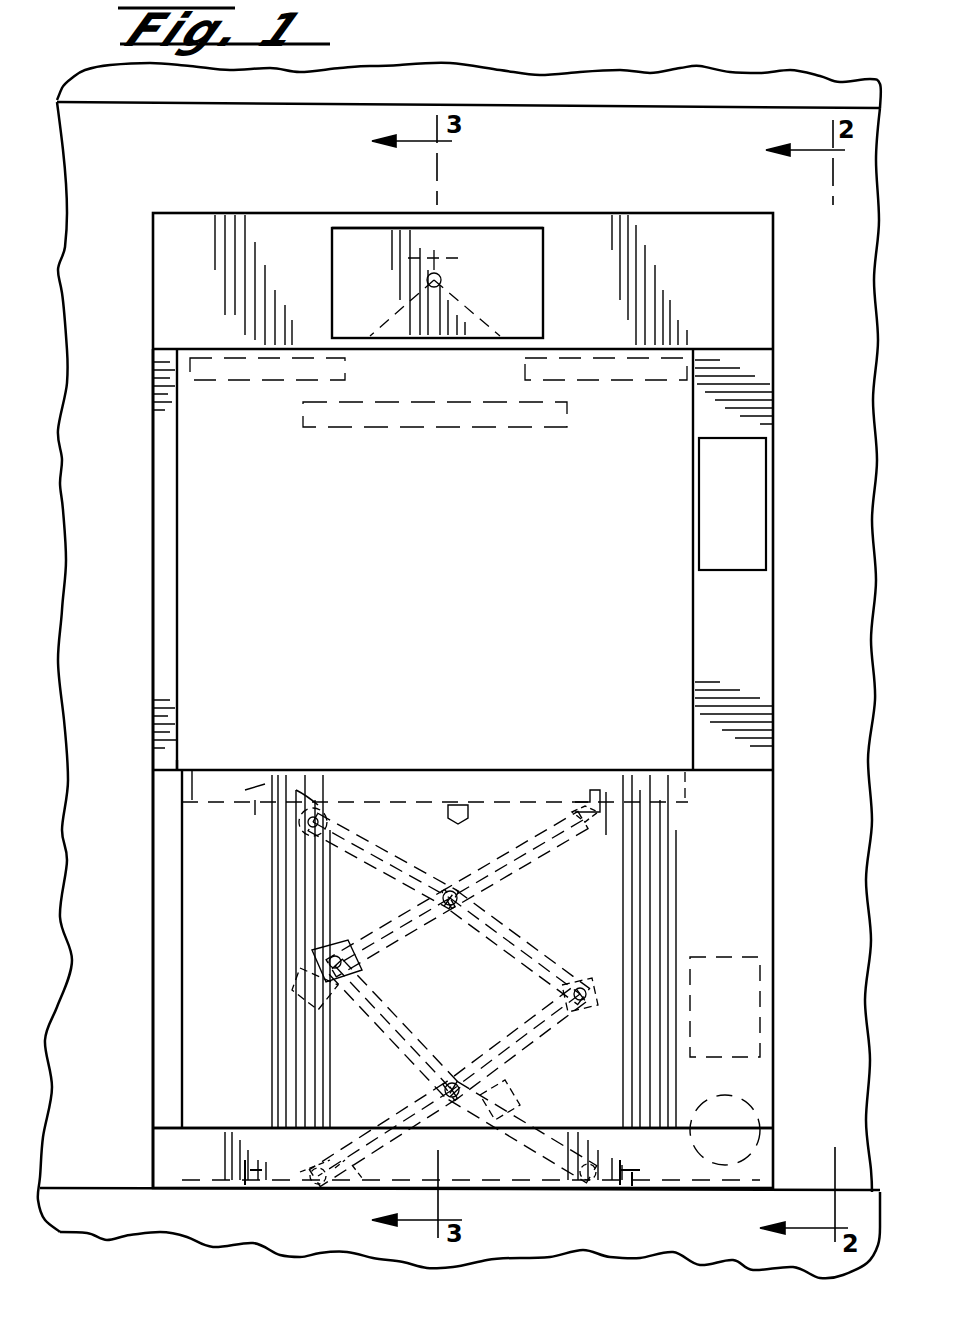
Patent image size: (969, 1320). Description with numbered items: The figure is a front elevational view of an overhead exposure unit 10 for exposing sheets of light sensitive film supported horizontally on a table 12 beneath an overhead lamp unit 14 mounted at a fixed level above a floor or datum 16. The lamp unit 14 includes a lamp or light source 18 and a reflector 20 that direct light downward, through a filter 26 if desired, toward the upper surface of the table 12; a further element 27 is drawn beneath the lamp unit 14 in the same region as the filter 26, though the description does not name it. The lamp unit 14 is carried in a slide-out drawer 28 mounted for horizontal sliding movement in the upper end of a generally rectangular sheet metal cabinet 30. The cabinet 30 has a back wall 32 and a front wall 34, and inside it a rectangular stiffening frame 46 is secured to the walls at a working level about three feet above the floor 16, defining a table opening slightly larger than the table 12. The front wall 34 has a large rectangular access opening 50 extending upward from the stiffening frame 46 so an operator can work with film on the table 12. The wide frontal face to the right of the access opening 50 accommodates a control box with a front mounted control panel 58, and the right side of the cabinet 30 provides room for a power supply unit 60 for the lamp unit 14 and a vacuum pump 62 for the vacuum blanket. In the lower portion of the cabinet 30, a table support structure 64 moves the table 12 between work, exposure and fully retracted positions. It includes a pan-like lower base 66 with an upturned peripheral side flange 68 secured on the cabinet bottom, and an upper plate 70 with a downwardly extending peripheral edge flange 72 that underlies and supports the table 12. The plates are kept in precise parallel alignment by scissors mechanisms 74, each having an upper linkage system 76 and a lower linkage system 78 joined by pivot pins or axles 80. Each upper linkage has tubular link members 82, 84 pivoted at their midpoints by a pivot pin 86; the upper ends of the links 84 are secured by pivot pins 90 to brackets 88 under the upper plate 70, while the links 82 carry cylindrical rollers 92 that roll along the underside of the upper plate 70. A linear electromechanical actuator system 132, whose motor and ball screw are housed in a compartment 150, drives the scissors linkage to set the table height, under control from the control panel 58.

The overhead exposure unit 10 is at (136, 598).
The table 12 is at (182, 806).
The overhead lamp unit 14 is at (490, 292).
The floor or datum 16 is at (100, 1186).
The lamp or light source 18 is at (436, 276).
The reflector 20 is at (382, 280).
The filter 26 is at (272, 372).
The guide rail 27 is at (418, 418).
The slide-out drawer 28 is at (543, 252).
The cabinet 30 is at (150, 990).
The back wall 32 is at (440, 553).
The front wall 34 is at (242, 953).
The stiffening frame 46 is at (180, 768).
The access opening 50 is at (185, 503).
The control panel 58 is at (746, 504).
The power supply unit 60 is at (735, 1038).
The vacuum pump 62 is at (755, 1100).
The table support structure 64 is at (583, 935).
The lower base plate 66 is at (352, 1185).
The upturned peripheral side flange 68 is at (242, 1188).
The upper plate 70 is at (460, 802).
The peripheral edge flange 72 is at (248, 812).
The scissors mechanism 74 is at (548, 1055).
The upper linkage system 76 is at (430, 898).
The lower linkage system 78 is at (415, 1088).
The pivot pins or axles 80 is at (300, 1006).
The link member 82 is at (440, 832).
The link member 84 is at (520, 862).
The pivot pin 86 is at (450, 908).
The brackets 88 is at (616, 806).
The pivot pins 90 is at (575, 818).
The cylindrical roller 92 is at (300, 805).
The linear electromechanical actuator system 132 is at (420, 1012).
The compartment 150 is at (512, 1076).